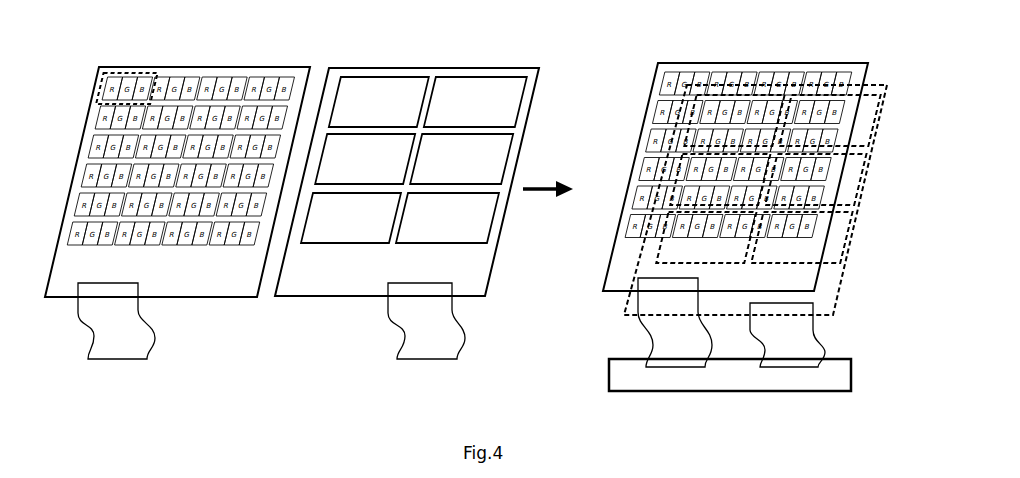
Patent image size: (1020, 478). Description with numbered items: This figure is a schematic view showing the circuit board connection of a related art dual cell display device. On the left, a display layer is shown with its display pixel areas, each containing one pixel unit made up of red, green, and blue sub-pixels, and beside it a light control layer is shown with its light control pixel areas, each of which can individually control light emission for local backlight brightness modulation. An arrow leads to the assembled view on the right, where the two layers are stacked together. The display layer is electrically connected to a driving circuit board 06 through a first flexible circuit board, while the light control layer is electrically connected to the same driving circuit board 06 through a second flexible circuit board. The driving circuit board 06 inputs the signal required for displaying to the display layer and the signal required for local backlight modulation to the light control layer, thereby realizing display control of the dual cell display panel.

The driving circuit board 06 is at (733, 385).